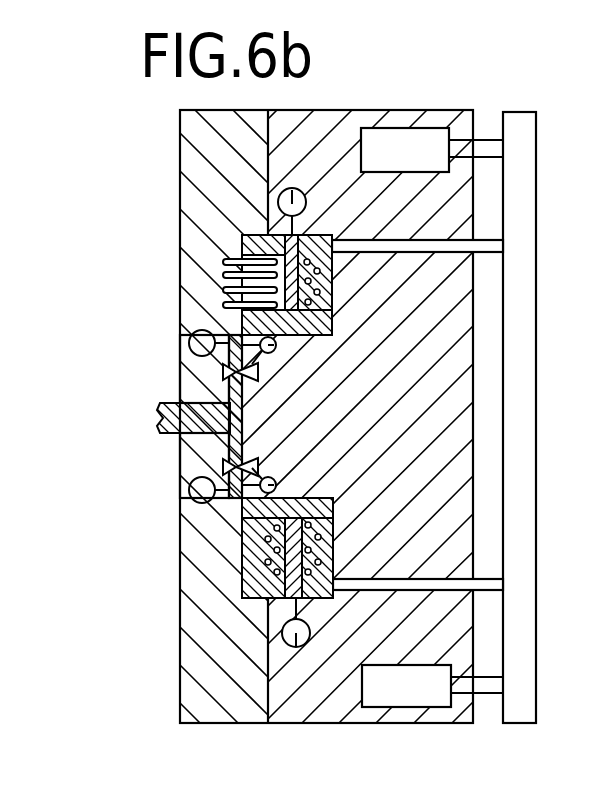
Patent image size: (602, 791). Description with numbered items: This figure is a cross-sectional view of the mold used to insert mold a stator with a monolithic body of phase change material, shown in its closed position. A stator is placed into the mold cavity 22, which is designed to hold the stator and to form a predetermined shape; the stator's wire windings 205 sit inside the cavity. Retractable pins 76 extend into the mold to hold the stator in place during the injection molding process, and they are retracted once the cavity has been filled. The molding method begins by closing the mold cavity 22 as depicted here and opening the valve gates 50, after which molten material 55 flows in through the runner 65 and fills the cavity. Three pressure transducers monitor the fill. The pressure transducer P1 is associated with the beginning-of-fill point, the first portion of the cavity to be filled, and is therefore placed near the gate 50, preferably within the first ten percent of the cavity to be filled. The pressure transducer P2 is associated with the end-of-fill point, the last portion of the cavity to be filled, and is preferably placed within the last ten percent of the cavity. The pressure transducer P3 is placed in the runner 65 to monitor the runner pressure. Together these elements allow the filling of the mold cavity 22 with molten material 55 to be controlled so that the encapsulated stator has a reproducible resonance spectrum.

The mold cavity 22 is at (220, 657).
The retractable pins 76 is at (453, 243).
The molten material 55 is at (332, 313).
The wire windings 205 is at (333, 531).
The runner 65 is at (177, 423).
The valve gates 50 is at (222, 372).
The pressure transducer P3 is at (200, 330).
The pressure transducer P1 is at (275, 352).
The pressure transducer P2 is at (296, 188).